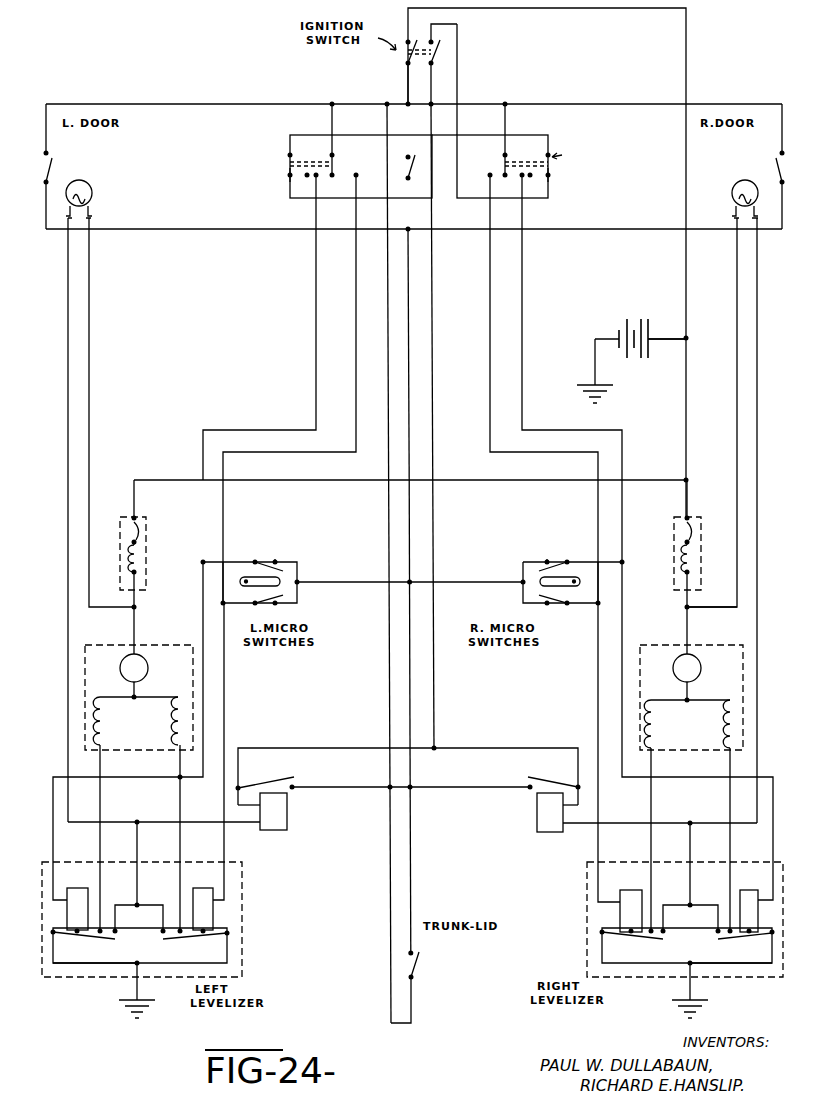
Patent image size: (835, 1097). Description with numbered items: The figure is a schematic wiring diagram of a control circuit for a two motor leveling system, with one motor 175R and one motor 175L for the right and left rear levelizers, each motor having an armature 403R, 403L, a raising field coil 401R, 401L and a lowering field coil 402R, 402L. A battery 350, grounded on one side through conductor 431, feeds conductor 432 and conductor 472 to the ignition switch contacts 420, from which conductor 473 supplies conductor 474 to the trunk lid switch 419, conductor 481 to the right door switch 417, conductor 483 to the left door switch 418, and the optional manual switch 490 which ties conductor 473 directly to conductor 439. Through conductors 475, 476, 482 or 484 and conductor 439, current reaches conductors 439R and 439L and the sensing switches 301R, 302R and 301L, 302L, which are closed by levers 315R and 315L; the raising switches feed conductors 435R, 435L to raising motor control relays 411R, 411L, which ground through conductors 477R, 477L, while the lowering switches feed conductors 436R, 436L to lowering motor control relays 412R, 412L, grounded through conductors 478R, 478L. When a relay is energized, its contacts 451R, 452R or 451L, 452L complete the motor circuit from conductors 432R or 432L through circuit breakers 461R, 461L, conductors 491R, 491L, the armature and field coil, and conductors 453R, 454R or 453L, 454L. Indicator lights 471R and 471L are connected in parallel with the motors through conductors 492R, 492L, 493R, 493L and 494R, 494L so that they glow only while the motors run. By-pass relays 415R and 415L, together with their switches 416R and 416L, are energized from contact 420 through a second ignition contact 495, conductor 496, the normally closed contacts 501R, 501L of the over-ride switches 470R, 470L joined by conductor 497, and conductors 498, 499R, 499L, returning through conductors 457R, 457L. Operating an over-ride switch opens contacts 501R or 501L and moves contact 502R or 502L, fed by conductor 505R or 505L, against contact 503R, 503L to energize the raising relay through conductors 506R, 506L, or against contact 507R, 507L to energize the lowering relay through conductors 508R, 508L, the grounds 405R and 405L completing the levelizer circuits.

The ignition switch contacts 420 is at (406, 61).
The conductor 473 is at (406, 90).
The second ignition switch contact 495 is at (441, 46).
The conductor 496 is at (458, 68).
The conductor 472 is at (688, 33).
The conductor 497 is at (494, 132).
The conductor 483 is at (206, 104).
The conductor 481 is at (605, 104).
The conductor 484 is at (163, 229).
The conductor 482 is at (617, 229).
The left door switch 418 is at (58, 161).
The right door switch 417 is at (780, 160).
The indicator light 471L is at (93, 194).
The indicator light 471R is at (739, 187).
The left over-ride switch 470L is at (275, 178).
The right over-ride switch 470R is at (581, 180).
The conductor 505L is at (334, 126).
The conductor 505R is at (507, 125).
The movable contact 502L is at (334, 157).
The movable contact 502R is at (504, 162).
The contact 507L is at (314, 179).
The contact 507R is at (524, 180).
The contact 503L is at (356, 180).
The contact 503R is at (489, 178).
The contacts 501L is at (290, 177).
The contacts 501R is at (550, 177).
The manual by-pass operating switch 490 is at (411, 180).
The conductor 474 is at (388, 280).
The conductor 439 is at (409, 308).
The conductor 498 is at (433, 270).
The conductor 476 is at (410, 671).
The conductor 475 is at (411, 878).
The trunk lid switch 419 is at (413, 982).
The conductor 508L is at (314, 288).
The conductor 508R is at (524, 282).
The conductor 506L is at (354, 318).
The conductor 506R is at (492, 318).
The battery 350 is at (657, 303).
The conductor 431 is at (594, 376).
The conductor 432 is at (676, 341).
The conductor 493L is at (70, 303).
The conductor 492L is at (91, 345).
The conductor 493R is at (758, 303).
The conductor 492R is at (739, 348).
The conductor 432L is at (374, 480).
The conductor 432R is at (688, 492).
The circuit breaker 461L is at (147, 521).
The circuit breaker 461R is at (690, 520).
The conductor 491L is at (136, 604).
The conductor 491R is at (689, 605).
The lowering sensing switch 302L is at (268, 562).
The lowering sensing switch 302R is at (557, 562).
The lever 315L is at (262, 590).
The lever 315R is at (575, 574).
The raising sensing switch 301L is at (266, 606).
The raising sensing switch 301R is at (553, 606).
The conductor 439L is at (368, 583).
The conductor 439R is at (494, 583).
The motor 175L is at (152, 630).
The motor 175R is at (678, 647).
The armature 403L is at (146, 681).
The armature 403R is at (697, 680).
The raising field winding 401L is at (175, 716).
The lowering field winding 402L is at (104, 728).
The raising field coil 401R is at (654, 722).
The lowering field coil 402R is at (728, 741).
The conductor 436L is at (205, 659).
The conductor 436R is at (624, 603).
The conductor 435L is at (226, 687).
The conductor 435R is at (596, 663).
The conductor 454L is at (102, 765).
The conductor 454R is at (728, 768).
The conductor 453L is at (181, 795).
The conductor 453R is at (653, 796).
The conductor 499L is at (306, 748).
The conductor 499R is at (450, 748).
The by-pass switch 416L is at (262, 788).
The by-pass switch 416R is at (540, 793).
The by-pass relay 415L is at (296, 829).
The by-pass relay 415R is at (528, 829).
The conductor 457L is at (190, 823).
The conductor 457R is at (610, 823).
The conductor 494L is at (139, 845).
The conductor 494R is at (692, 848).
The lowering motor control relay 412L is at (97, 862).
The lowering motor control relay 412R is at (766, 915).
The raising motor control relay 411L is at (246, 912).
The raising motor control relay 411R is at (611, 912).
The conductor 477L is at (228, 952).
The conductor 477R is at (600, 956).
The contacts 452L is at (90, 946).
The contacts 451L is at (197, 946).
The contacts 451R is at (631, 948).
The contacts 452R is at (742, 946).
The ground connection 405L is at (86, 973).
The ground connection 405R is at (727, 983).
The conductor 478L is at (58, 963).
The conductor 478R is at (762, 963).